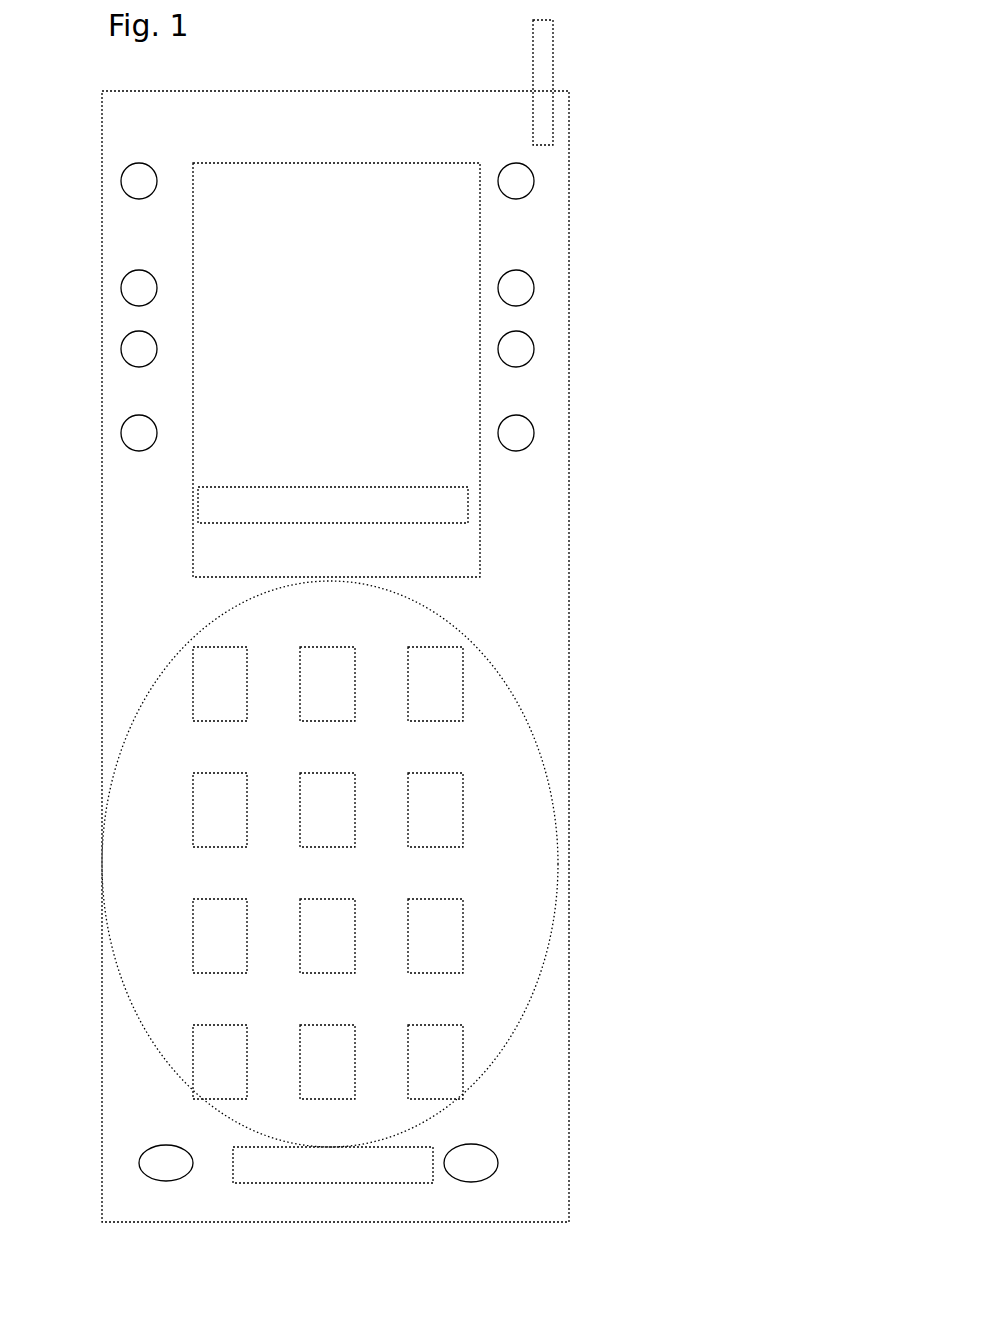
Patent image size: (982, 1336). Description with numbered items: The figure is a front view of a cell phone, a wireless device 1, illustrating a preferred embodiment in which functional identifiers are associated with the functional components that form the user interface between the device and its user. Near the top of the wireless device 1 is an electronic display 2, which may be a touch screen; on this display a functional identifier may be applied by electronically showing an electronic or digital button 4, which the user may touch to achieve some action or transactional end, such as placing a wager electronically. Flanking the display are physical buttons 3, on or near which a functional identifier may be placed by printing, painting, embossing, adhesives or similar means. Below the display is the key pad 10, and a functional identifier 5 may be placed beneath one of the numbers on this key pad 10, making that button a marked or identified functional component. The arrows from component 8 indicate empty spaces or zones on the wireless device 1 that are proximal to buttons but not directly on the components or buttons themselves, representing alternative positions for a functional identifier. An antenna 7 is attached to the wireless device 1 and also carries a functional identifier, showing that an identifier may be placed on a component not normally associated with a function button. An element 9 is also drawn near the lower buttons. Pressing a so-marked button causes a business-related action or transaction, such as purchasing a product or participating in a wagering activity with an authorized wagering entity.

The wireless device 1 is at (72, 68).
The electronic display 2 is at (330, 161).
The physical buttons 3 is at (495, 202).
The electronic or digital button 4 is at (315, 486).
The functional identifier 5 is at (450, 730).
The antenna 7 is at (540, 105).
The component 8 is at (512, 1097).
The control key 9 is at (252, 1142).
The key pad 10 is at (136, 712).